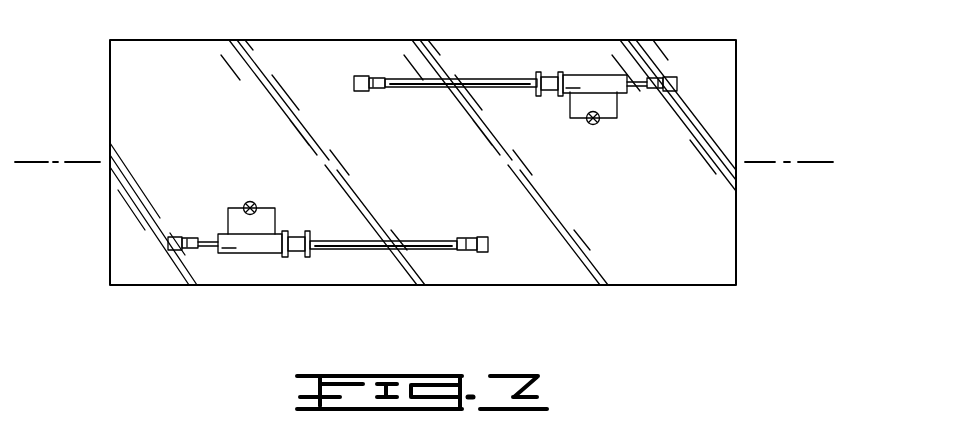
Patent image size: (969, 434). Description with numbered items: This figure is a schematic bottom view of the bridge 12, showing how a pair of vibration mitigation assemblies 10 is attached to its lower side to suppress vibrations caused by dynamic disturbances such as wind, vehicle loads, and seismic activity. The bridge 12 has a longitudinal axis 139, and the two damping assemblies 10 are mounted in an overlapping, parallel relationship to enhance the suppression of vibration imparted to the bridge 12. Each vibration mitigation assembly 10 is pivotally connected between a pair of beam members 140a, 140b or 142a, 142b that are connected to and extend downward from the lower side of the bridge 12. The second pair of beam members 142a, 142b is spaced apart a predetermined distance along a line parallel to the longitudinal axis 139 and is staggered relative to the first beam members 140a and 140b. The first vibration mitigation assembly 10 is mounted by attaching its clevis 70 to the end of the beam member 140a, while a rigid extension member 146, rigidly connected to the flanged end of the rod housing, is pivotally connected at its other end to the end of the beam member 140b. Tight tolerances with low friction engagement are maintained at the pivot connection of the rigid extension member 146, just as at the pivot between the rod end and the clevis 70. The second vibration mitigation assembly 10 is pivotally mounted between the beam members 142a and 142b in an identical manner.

The vibration mitigation assembly 10 is at (595, 70).
The bridge 12 is at (298, 50).
The clevis 70 is at (658, 77).
The longitudinal axis 139 is at (820, 162).
The beam member 140a is at (173, 237).
The beam member 140b is at (483, 252).
The beam member 142a is at (670, 76).
The beam member 142b is at (363, 75).
The rigid extension member 146 is at (420, 90).